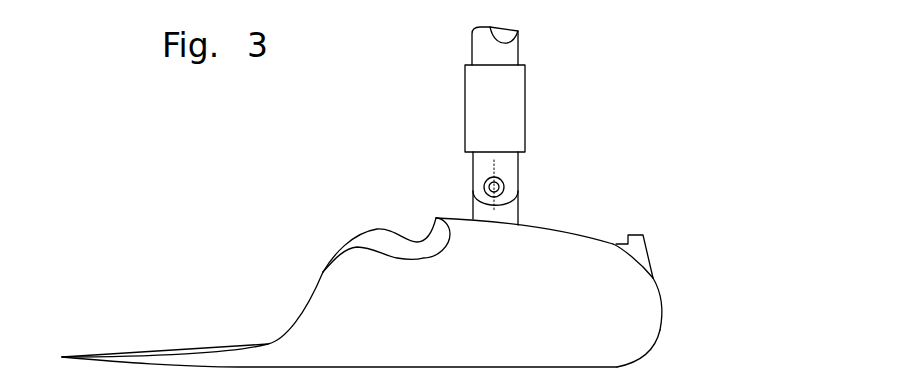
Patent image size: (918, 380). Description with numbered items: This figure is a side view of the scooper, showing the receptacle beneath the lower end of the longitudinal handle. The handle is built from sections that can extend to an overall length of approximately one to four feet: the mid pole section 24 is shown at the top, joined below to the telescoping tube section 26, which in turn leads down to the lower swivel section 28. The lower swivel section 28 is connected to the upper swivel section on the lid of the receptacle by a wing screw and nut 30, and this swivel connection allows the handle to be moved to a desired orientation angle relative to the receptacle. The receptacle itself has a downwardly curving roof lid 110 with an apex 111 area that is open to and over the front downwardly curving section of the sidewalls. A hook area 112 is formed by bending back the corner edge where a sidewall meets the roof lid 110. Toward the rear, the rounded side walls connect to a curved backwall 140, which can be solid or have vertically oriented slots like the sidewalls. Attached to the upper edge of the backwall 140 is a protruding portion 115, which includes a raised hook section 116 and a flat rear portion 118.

The mid pole section 24 is at (497, 53).
The telescoping tube section 26 is at (503, 110).
The lower swivel section 28 is at (482, 169).
The wing screw and nut 30 is at (490, 217).
The roof lid 110 is at (560, 230).
The apex 111 is at (436, 218).
The hook area 112 is at (480, 249).
The protruding portion 115 is at (608, 263).
The raised hook section 116 is at (613, 245).
The flat rear portion 118 is at (650, 255).
The backwall 140 is at (650, 345).